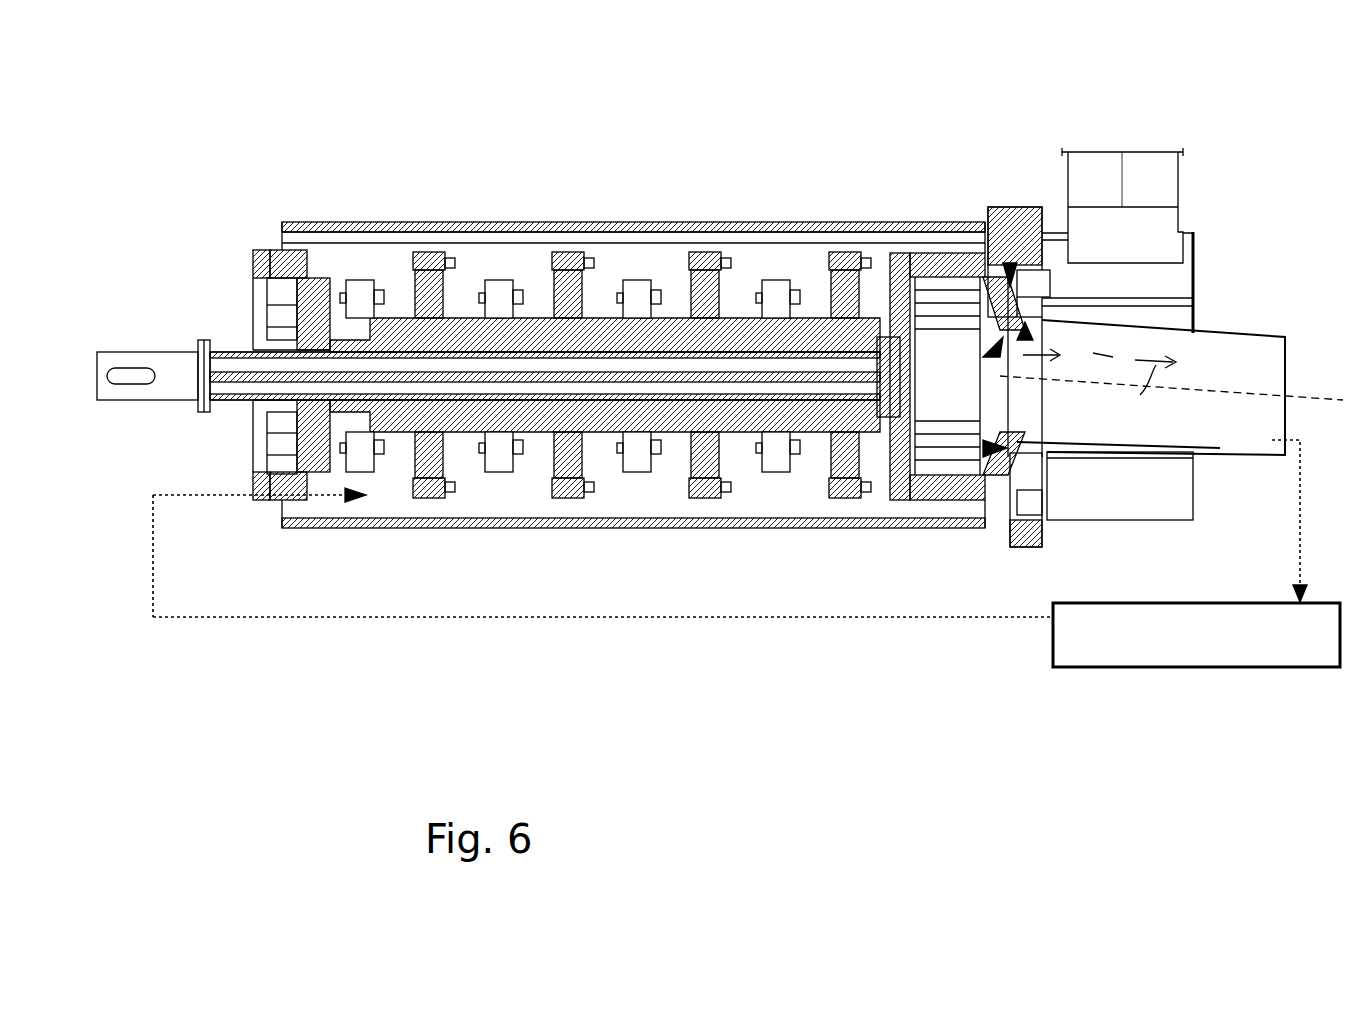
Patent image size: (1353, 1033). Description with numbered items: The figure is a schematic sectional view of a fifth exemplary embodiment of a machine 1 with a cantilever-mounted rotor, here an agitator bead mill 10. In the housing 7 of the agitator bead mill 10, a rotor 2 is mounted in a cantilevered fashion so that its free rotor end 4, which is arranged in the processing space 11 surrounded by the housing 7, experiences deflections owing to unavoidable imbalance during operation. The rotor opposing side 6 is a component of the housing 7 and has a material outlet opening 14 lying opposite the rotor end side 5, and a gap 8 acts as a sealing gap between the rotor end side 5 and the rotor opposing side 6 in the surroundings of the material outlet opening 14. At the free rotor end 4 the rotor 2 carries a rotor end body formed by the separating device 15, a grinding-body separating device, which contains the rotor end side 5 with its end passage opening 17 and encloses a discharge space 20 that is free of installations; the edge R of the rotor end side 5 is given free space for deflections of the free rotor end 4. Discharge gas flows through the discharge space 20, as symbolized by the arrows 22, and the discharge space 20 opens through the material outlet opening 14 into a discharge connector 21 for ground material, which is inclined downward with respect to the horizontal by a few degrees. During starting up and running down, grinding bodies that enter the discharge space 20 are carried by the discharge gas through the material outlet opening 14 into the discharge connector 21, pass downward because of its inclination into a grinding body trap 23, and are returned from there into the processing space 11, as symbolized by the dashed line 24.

The machine 1 is at (536, 105).
The rotor 2 is at (418, 558).
The free rotor end 4 is at (465, 165).
The rotor end side 5 is at (1025, 572).
The rotor opposing side 6 is at (905, 462).
The housing 7 is at (866, 222).
The gap 8 is at (1013, 207).
The agitator bead mill 10 is at (268, 125).
The processing space 11 is at (418, 668).
The material outlet opening 14 is at (968, 240).
The separating device 15 is at (925, 688).
The end passage opening 17 is at (925, 255).
The discharge space 20 is at (722, 135).
The discharge connector 21 is at (1250, 285).
The arrows 22 is at (1079, 360).
The grinding body trap 23 is at (1190, 662).
The dashed line 24 is at (762, 617).
The edge R is at (993, 503).